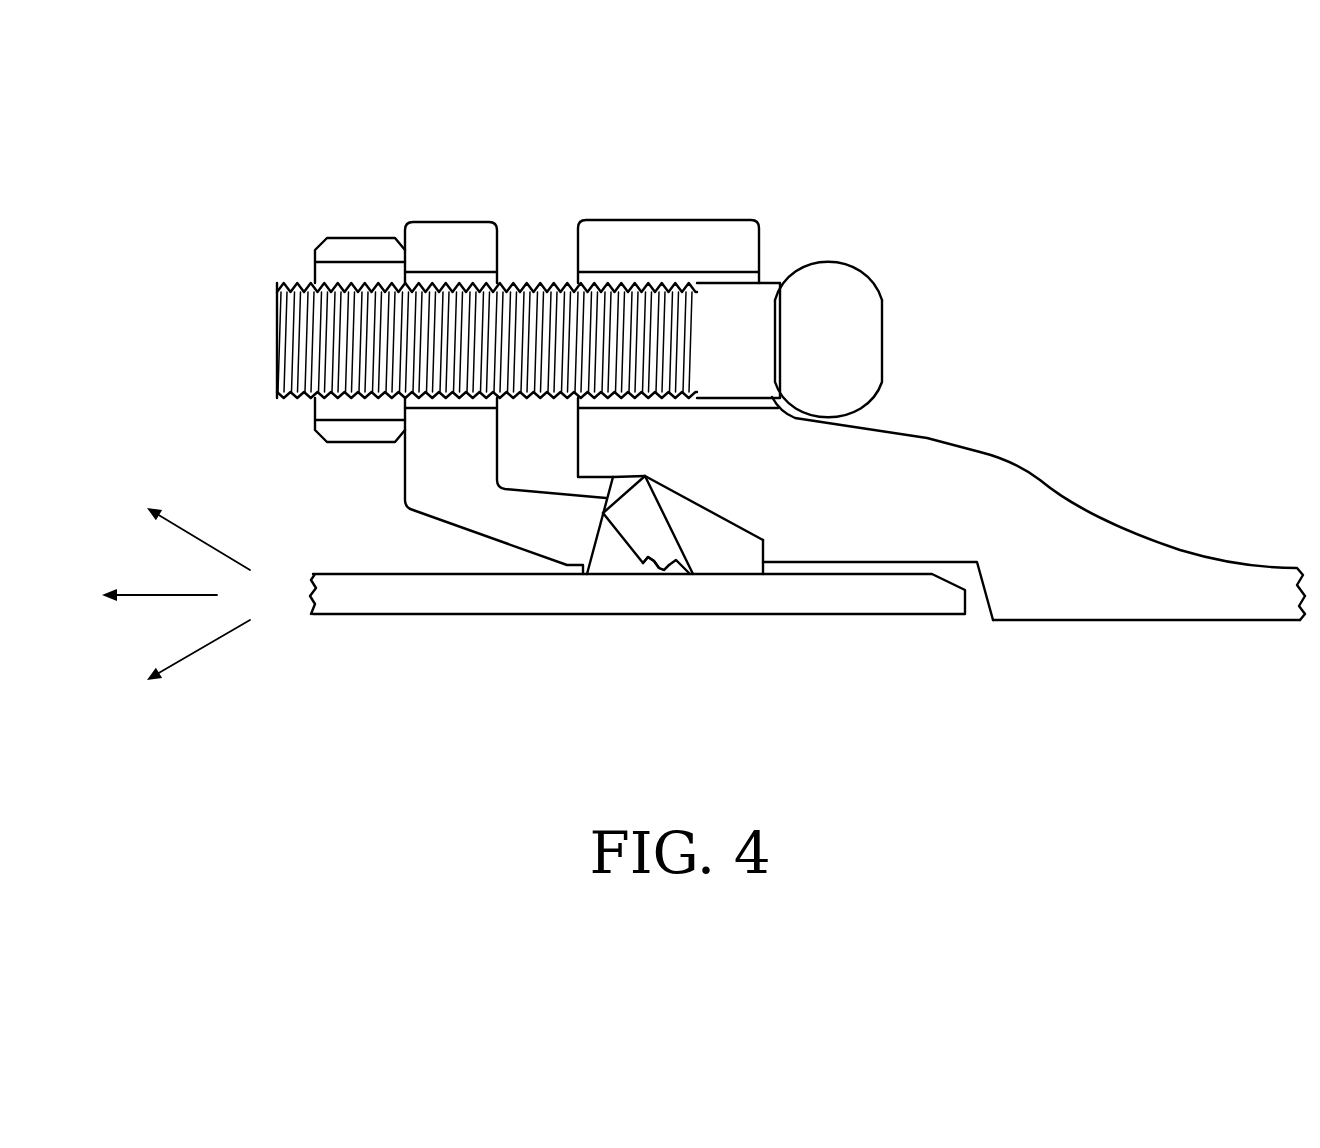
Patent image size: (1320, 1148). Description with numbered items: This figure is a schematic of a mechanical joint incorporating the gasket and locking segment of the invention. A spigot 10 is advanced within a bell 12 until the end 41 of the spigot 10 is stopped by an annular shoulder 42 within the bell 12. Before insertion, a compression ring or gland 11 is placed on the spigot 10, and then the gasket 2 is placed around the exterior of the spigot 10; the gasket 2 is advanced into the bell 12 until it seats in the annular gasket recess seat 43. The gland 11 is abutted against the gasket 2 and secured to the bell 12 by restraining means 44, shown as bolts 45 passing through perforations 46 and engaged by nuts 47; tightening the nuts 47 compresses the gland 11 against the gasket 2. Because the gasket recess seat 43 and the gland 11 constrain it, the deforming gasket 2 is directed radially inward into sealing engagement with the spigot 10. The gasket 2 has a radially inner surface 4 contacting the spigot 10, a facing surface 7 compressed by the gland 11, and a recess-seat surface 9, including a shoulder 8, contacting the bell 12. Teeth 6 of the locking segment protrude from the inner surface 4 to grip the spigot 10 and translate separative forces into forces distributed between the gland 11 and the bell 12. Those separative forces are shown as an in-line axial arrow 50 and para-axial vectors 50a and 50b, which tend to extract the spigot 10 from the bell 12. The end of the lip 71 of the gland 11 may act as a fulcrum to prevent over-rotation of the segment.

The gasket 2 is at (707, 543).
The radially inner surface 4 is at (663, 560).
The teeth 6 is at (662, 517).
The facing surface 7 is at (600, 542).
The shoulder 8 is at (767, 548).
The recess-seat surface 9 is at (733, 527).
The spigot 10 is at (445, 598).
The gland 11 is at (447, 223).
The bell 12 is at (977, 467).
The end of spigot 41 is at (965, 607).
The annular shoulder 42 is at (992, 590).
The annular gasket recess seat 43 is at (707, 507).
The restraining means 44 is at (884, 330).
The bolts 45 is at (866, 275).
The perforations 46 is at (598, 277).
The nuts 47 is at (358, 245).
The directional arrow 50 is at (159, 578).
The vector 50a is at (198, 534).
The vector 50b is at (198, 659).
The lip 71 is at (537, 492).